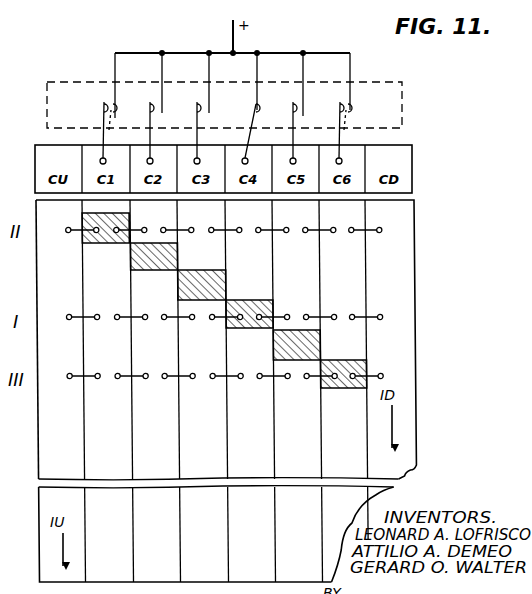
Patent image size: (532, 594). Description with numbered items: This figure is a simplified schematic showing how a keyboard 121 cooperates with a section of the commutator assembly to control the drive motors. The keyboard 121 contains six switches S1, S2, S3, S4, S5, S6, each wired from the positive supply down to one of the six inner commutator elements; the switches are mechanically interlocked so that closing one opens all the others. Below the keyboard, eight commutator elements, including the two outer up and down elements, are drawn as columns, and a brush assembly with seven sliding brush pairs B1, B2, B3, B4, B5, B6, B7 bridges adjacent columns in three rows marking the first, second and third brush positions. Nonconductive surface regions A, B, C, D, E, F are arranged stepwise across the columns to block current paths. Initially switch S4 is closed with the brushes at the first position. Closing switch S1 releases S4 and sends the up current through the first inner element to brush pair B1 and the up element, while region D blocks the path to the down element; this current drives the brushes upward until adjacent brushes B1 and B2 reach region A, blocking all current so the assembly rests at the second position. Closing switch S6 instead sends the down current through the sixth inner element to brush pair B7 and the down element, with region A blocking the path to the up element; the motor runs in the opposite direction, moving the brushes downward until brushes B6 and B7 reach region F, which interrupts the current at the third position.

The keyboard 121 is at (378, 81).
The keyboard switch S1 is at (103, 122).
The keyboard switch S2 is at (145, 122).
The keyboard switch S3 is at (192, 122).
The keyboard switch S4 is at (246, 122).
The keyboard switch S5 is at (288, 122).
The keyboard switch S6 is at (338, 122).
The nonconductive surface region A is at (115, 244).
The nonconductive surface region B is at (161, 271).
The nonconductive surface region C is at (213, 270).
The nonconductive surface region D is at (246, 330).
The nonconductive surface region E is at (322, 345).
The nonconductive surface region F is at (355, 389).
The sliding brush pair B1 is at (90, 318).
The sliding brush pair B2 is at (122, 318).
The sliding brush pair B3 is at (170, 320).
The sliding brush pair B4 is at (218, 321).
The sliding brush pair B5 is at (280, 318).
The sliding brush pair B6 is at (325, 318).
The sliding brush pair B7 is at (372, 318).